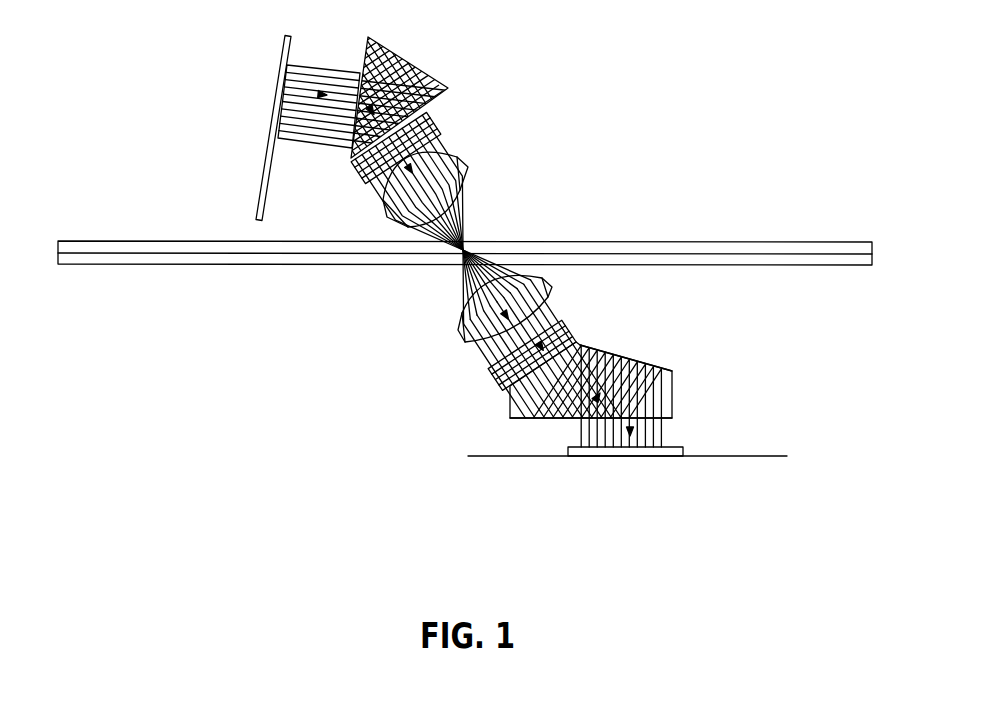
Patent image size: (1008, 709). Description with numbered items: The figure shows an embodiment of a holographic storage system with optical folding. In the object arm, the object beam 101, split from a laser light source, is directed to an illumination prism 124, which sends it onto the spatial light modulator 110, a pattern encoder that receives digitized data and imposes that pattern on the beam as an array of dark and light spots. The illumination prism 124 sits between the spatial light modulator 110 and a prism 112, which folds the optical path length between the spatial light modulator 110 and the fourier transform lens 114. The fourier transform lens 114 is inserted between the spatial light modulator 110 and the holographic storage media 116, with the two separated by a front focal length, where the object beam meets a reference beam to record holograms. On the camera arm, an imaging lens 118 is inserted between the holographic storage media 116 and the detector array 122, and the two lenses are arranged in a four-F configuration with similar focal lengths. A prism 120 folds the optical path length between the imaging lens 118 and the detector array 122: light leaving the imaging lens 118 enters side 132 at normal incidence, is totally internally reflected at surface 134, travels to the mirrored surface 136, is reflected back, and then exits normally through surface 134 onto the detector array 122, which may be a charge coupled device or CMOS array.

The spatial light modulator 110 is at (282, 53).
The object beam 101 is at (298, 90).
The illumination prism 124 is at (313, 150).
The prism 112 is at (400, 56).
The fourier transform lens 114 is at (458, 157).
The holographic storage media 116 is at (717, 241).
The side 132 is at (483, 352).
The imaging lens 118 is at (560, 318).
The prism 120 is at (685, 390).
The mirrored surface 136 is at (646, 346).
The surface 134 is at (534, 430).
The detector array 122 is at (639, 477).